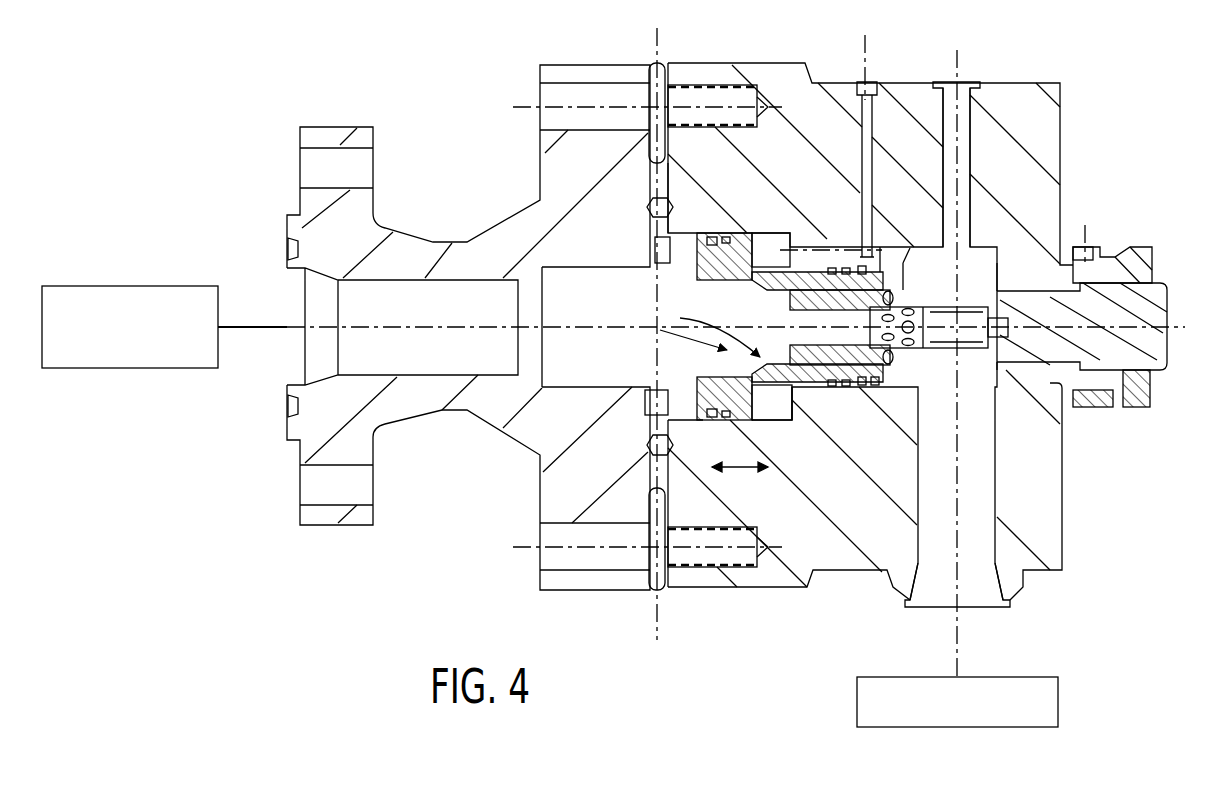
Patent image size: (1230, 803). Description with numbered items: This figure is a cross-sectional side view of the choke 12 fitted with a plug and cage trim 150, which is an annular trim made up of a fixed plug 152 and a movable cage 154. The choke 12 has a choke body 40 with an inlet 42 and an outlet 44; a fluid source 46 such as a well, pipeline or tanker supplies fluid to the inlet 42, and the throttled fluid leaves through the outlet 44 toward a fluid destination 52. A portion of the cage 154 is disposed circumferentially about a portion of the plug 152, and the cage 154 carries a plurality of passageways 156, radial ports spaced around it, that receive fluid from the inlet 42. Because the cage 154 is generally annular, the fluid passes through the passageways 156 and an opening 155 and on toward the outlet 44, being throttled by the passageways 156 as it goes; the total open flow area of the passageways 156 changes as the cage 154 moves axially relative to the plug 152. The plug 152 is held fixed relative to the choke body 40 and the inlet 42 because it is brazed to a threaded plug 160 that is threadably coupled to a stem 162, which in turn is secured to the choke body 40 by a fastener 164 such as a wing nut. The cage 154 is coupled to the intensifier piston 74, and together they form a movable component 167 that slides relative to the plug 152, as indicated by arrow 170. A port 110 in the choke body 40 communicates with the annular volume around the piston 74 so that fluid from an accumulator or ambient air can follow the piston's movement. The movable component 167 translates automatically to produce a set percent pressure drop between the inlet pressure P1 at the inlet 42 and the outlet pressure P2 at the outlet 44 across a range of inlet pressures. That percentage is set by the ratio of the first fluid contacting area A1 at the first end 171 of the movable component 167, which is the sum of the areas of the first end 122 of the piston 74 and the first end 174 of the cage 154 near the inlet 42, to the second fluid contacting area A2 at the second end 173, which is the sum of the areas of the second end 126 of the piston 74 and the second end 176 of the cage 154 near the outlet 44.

The choke 12 is at (1040, 38).
The choke body 40 is at (1013, 98).
The inlet 42 is at (970, 580).
The outlet 44 is at (645, 300).
The fluid source 46 is at (1058, 705).
The fluid destination 52 is at (130, 286).
The intensifier piston 74 is at (740, 393).
The port 110 is at (870, 127).
The first end of the intensifier piston 122 is at (873, 390).
The second end of the intensifier piston 126 is at (703, 393).
The plug and cage trim 150 is at (928, 403).
The fixed plug 152 is at (972, 305).
The movable cage 154 is at (793, 387).
The opening 155 is at (759, 313).
The passageways 156 is at (907, 360).
The threaded plug 160 is at (993, 320).
The stem 162 is at (1150, 315).
The fastener 164 is at (1140, 255).
The movable component 167 is at (745, 350).
The arrow 170 is at (743, 470).
The first end of the movable component 171 is at (942, 376).
The second end of the movable component 173 is at (762, 348).
The first end of the cage 174 is at (993, 345).
The second end of the cage 176 is at (787, 297).
The first fluid contacting cross-sectional area A1 is at (928, 376).
The second fluid contacting cross-sectional contact area A2 is at (715, 357).
The inlet pressure P1 is at (949, 502).
The outlet pressure P2 is at (613, 370).